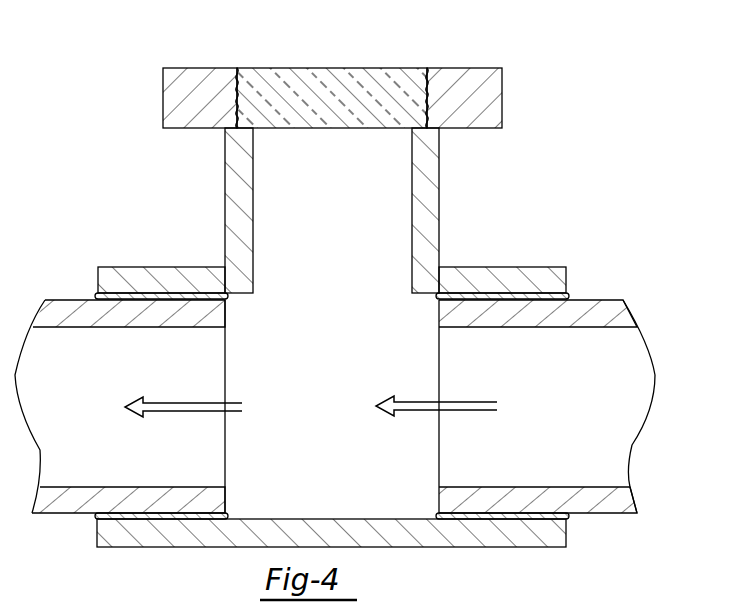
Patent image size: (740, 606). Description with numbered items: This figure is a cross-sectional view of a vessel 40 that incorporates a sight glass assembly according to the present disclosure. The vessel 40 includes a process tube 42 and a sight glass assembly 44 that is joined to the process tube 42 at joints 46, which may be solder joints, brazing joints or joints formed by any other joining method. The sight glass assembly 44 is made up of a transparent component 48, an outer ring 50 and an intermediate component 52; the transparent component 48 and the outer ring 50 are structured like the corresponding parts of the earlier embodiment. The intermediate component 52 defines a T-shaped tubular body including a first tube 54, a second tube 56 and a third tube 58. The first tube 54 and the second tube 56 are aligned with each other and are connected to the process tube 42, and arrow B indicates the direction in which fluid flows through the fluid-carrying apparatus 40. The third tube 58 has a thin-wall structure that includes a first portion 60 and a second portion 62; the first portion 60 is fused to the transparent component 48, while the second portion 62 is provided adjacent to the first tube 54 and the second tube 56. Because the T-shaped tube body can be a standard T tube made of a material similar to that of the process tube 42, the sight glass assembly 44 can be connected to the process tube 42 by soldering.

The vessel 40 is at (563, 56).
The process tube 42 is at (598, 300).
The sight glass assembly 44 is at (124, 72).
The joints 46 is at (232, 298).
The transparent component 48 is at (304, 68).
The outer ring 50 is at (208, 68).
The intermediate component 52 is at (200, 231).
The first tube 54 is at (115, 265).
The second tube 56 is at (503, 266).
The third tube 58 is at (446, 197).
The first portion 60 is at (238, 68).
The second portion 62 is at (225, 175).